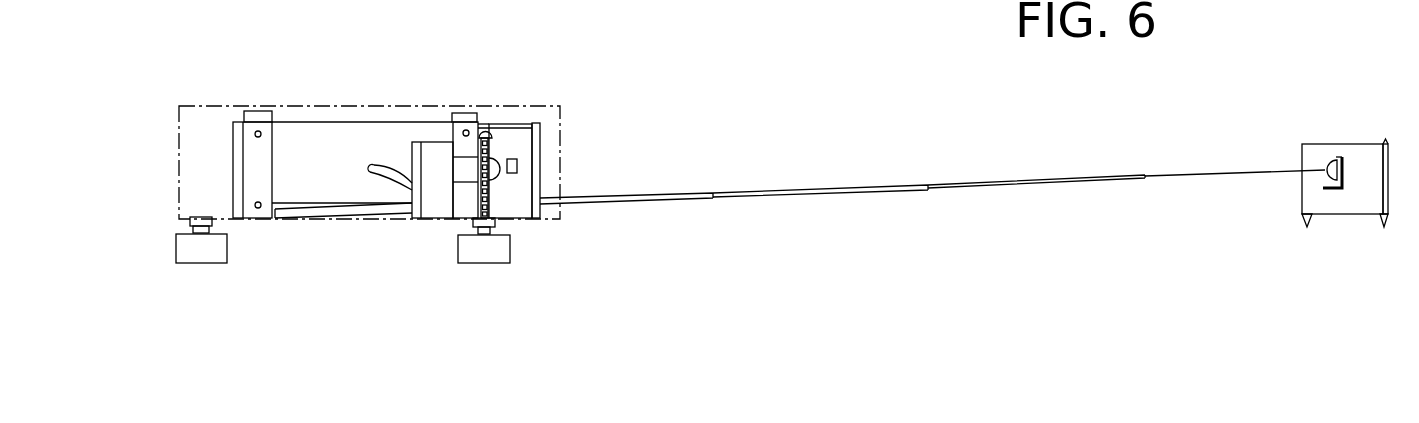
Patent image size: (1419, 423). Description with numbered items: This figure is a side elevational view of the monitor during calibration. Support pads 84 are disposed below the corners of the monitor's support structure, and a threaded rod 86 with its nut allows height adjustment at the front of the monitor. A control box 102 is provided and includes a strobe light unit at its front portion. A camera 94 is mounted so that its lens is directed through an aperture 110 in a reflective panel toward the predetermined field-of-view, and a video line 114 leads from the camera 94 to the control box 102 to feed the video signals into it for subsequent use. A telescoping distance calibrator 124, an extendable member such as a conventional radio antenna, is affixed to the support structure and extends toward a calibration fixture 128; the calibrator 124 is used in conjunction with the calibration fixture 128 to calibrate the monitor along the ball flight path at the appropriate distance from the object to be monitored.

The support pads 84 is at (180, 249).
The threaded rod 86 is at (492, 142).
The camera 94 is at (396, 4).
The control box 102 is at (310, 177).
The aperture 110 is at (518, 167).
The video line 114 is at (394, 178).
The telescoping distance calibrator 124 is at (1103, 175).
The calibration fixture 128 is at (1352, 144).